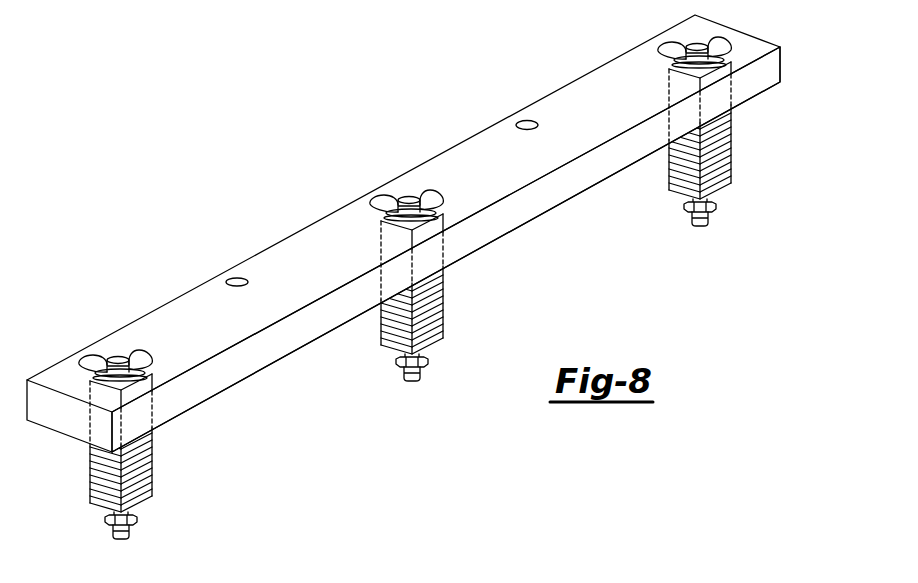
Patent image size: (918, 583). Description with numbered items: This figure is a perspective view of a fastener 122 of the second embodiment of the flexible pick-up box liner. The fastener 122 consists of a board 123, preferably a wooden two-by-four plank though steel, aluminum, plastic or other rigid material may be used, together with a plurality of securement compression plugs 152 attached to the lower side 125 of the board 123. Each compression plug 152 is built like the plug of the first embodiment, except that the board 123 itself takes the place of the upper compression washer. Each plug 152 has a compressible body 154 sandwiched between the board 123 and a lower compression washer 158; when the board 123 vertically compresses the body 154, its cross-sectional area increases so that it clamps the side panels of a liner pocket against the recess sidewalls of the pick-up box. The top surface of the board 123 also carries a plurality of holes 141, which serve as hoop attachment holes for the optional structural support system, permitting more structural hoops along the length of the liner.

The fastener 122 is at (447, 101).
The board 123 is at (205, 303).
The lower side 125 is at (333, 351).
The holes 141 is at (667, 46).
The securement compression plug 152 is at (448, 300).
The compressible body 154 is at (735, 140).
The lower compression washer 158 is at (687, 205).